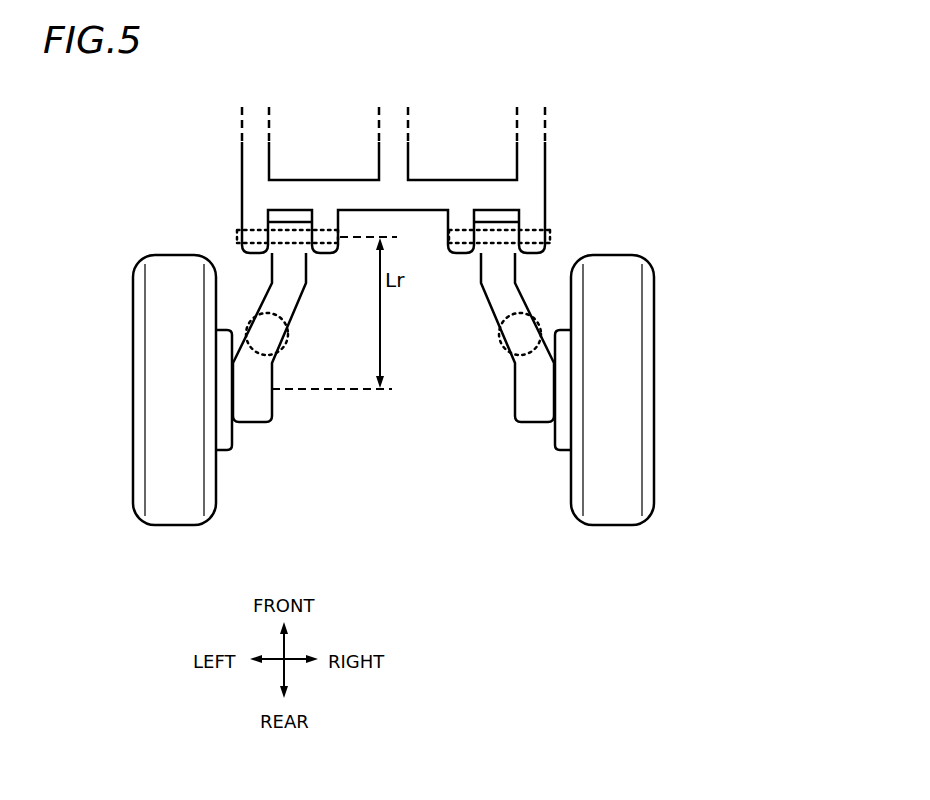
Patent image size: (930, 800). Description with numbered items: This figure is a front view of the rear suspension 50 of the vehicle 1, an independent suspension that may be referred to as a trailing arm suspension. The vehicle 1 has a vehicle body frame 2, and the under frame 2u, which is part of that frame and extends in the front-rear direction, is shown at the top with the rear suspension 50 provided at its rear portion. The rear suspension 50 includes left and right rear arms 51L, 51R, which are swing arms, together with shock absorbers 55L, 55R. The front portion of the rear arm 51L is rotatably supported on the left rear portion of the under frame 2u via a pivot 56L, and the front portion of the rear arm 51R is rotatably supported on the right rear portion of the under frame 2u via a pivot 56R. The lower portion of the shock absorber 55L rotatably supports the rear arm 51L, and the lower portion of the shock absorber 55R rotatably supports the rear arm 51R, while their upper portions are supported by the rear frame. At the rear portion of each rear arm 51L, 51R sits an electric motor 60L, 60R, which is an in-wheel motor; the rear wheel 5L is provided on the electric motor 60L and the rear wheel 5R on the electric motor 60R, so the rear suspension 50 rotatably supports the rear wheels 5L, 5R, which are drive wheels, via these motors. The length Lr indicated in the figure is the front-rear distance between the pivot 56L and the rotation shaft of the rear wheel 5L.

The vehicle 1 is at (419, 132).
The vehicle body frame 2 is at (419, 180).
The under frame 2u is at (541, 197).
The rear wheel 5L is at (133, 505).
The rear wheel 5R is at (654, 505).
The rear suspension 50 is at (393, 375).
The rear arm 51L is at (296, 291).
The rear arm 51R is at (492, 292).
The shock absorber 55L is at (284, 344).
The shock absorber 55R is at (502, 345).
The pivot 56L is at (256, 230).
The pivot 56R is at (531, 230).
The electric motor 60L is at (227, 434).
The electric motor 60R is at (559, 434).